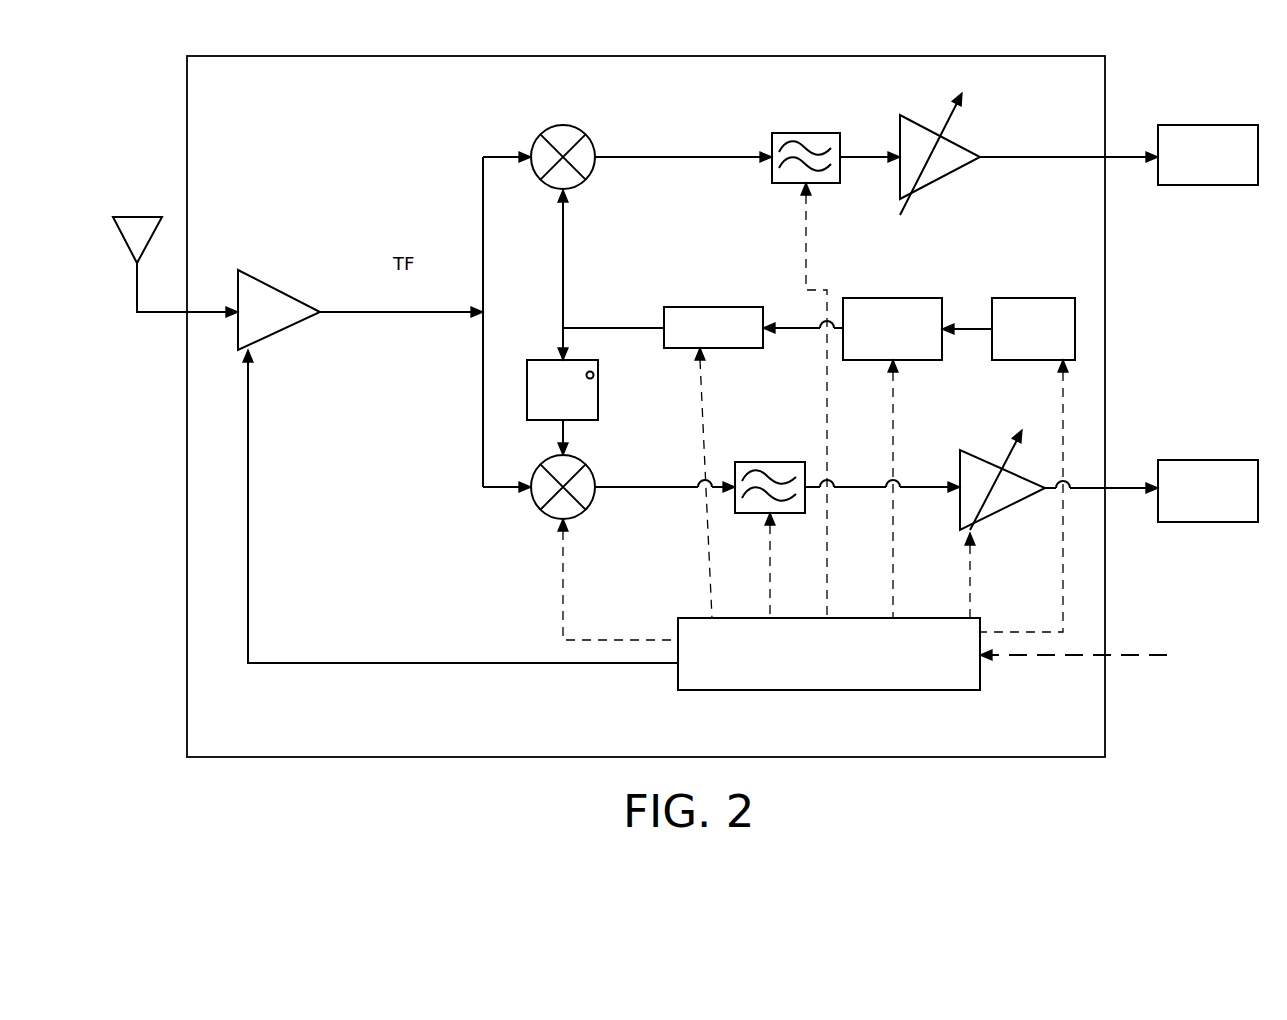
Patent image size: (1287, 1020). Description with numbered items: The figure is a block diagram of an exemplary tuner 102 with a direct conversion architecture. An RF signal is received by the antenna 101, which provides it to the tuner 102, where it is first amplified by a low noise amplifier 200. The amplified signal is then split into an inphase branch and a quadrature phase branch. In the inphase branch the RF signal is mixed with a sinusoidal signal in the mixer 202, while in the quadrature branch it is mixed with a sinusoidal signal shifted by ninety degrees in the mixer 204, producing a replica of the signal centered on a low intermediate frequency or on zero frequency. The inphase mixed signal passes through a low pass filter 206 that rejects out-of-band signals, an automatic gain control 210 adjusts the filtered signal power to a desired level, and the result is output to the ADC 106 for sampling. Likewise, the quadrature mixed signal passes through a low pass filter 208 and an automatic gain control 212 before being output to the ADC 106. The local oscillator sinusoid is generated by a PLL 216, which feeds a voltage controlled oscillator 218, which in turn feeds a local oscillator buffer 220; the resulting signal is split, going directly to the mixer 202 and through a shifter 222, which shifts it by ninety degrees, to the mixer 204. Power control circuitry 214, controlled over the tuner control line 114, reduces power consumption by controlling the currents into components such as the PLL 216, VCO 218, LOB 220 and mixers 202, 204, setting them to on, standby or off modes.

The antenna 101 is at (124, 208).
The tuner 102 is at (646, 406).
The ADC 106 is at (1208, 323).
The tuner control line 114 is at (1111, 681).
The low noise amplifier 200 is at (251, 268).
The mixer 202 is at (580, 124).
The mixer 204 is at (584, 518).
The low pass filter 206 is at (783, 125).
The low pass filter 208 is at (748, 454).
The automatic gain control 210 is at (954, 134).
The automatic gain control 212 is at (1005, 547).
The power control circuitry 214 is at (611, 520).
The PLL 216 is at (1008, 465).
The voltage controlled oscillator 218 is at (892, 458).
The local oscillator buffer 220 is at (753, 462).
The shifter 222 is at (605, 415).